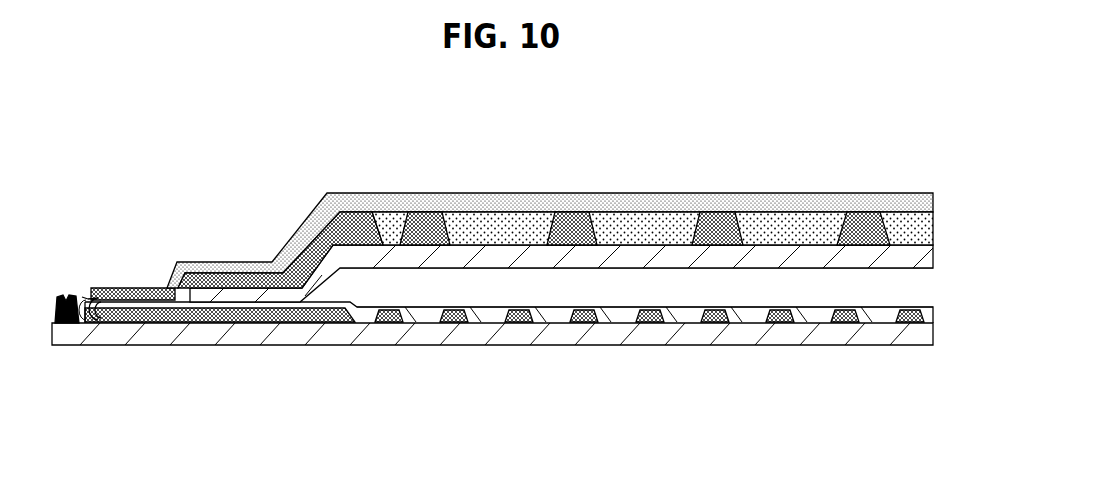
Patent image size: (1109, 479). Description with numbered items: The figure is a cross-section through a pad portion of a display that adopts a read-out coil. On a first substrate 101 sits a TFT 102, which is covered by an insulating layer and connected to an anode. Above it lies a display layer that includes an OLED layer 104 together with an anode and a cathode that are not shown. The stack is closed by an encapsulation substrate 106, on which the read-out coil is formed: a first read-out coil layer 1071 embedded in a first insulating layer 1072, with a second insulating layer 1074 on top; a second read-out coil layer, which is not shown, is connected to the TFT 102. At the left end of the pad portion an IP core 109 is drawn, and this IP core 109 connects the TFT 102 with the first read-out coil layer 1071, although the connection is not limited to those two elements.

The first substrate 101 is at (507, 333).
The TFT 102 is at (717, 313).
The OLED layer 104 is at (810, 288).
The encapsulation substrate 106 is at (907, 257).
The IP core 109 is at (63, 294).
The first read-out coil layer 1071 is at (427, 222).
The first insulating layer 1072 is at (778, 222).
The second insulating layer 1074 is at (630, 205).